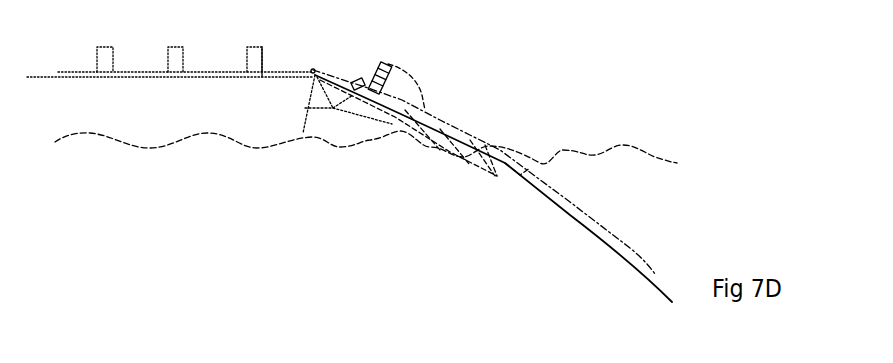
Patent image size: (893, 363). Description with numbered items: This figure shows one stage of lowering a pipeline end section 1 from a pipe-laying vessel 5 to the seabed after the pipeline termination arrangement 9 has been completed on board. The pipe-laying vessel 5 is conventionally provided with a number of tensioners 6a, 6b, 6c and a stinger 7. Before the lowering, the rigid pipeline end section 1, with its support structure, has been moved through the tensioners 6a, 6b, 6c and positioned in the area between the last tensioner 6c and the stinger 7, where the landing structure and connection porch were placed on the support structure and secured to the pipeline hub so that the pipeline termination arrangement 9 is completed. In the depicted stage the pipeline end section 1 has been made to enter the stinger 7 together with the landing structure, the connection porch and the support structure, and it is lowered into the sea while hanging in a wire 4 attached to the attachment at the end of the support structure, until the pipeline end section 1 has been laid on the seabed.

The pipeline end section 1 is at (443, 103).
The wire 4 is at (283, 70).
The pipe-laying vessel 5 is at (294, 113).
The tensioner 6a is at (103, 47).
The tensioner 6b is at (175, 47).
The tensioner 6c is at (253, 47).
The stinger 7 is at (363, 113).
The pipeline termination arrangement 9 is at (355, 71).